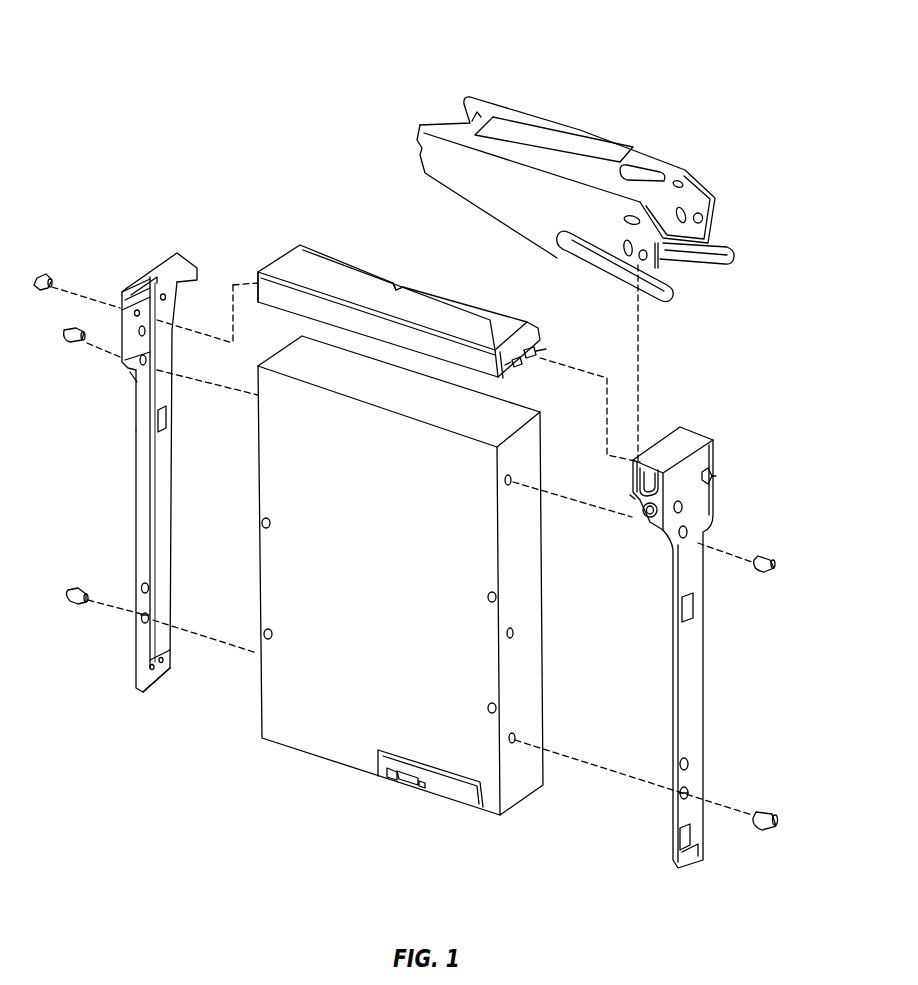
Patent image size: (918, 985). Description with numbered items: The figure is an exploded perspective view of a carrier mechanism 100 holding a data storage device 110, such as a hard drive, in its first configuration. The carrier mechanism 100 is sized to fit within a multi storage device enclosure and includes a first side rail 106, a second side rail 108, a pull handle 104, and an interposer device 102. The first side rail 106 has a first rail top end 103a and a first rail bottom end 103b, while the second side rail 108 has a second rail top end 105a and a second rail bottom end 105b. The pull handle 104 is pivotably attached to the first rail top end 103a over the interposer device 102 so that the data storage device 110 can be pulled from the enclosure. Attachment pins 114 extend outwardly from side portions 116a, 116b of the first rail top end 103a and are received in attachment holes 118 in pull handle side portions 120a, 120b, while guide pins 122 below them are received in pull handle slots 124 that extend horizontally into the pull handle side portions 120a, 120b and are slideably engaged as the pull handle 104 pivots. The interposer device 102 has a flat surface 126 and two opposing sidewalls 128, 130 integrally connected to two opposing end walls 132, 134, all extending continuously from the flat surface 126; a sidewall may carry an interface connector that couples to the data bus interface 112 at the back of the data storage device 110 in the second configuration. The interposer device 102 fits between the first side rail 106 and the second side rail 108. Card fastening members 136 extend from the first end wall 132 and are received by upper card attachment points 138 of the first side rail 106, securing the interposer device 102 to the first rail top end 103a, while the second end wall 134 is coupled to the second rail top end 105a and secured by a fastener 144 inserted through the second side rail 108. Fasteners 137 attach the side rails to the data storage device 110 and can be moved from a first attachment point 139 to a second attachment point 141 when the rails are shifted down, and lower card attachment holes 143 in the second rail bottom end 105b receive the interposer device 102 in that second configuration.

The carrier mechanism 100 is at (133, 42).
The interposer device 102 is at (297, 264).
The first rail top end 103a is at (701, 420).
The first rail bottom end 103b is at (690, 876).
The pull handle 104 is at (712, 204).
The second rail top end 105a is at (177, 245).
The second rail bottom end 105b is at (130, 695).
The first side rail 106 is at (710, 506).
The second side rail 108 is at (138, 280).
The data storage device 110 is at (262, 738).
The data bus interface 112 is at (452, 795).
The attachment pins 114 is at (632, 497).
The side portion of first rail top end 116a is at (700, 520).
The side portion of first rail top end 116b is at (716, 454).
The attachment holes 118 is at (716, 226).
The pull handle side portion 120a is at (488, 200).
The pull handle side portion 120b is at (688, 182).
The guide pins 122 is at (644, 522).
The pull handle slots 124 is at (733, 258).
The flat surface 126 is at (342, 270).
The sidewall 128 is at (305, 308).
The sidewall 130 is at (405, 290).
The first end wall 132 is at (514, 368).
The second end wall 134 is at (255, 283).
The card fastening members 136 is at (546, 352).
The fasteners 137 is at (70, 588).
The upper card attachment points 138 is at (718, 476).
The first attachment point 139 is at (140, 618).
The second attachment point 141 is at (140, 585).
The lower card attachment holes 143 is at (172, 672).
The fastener 144 is at (45, 274).